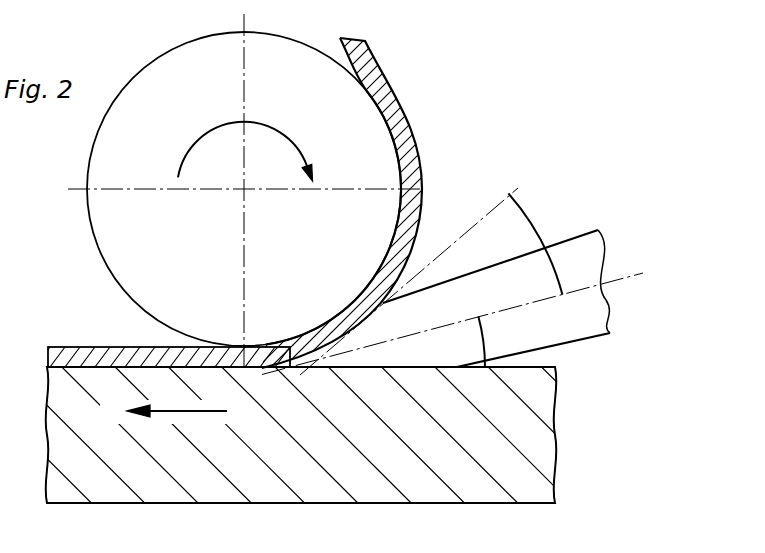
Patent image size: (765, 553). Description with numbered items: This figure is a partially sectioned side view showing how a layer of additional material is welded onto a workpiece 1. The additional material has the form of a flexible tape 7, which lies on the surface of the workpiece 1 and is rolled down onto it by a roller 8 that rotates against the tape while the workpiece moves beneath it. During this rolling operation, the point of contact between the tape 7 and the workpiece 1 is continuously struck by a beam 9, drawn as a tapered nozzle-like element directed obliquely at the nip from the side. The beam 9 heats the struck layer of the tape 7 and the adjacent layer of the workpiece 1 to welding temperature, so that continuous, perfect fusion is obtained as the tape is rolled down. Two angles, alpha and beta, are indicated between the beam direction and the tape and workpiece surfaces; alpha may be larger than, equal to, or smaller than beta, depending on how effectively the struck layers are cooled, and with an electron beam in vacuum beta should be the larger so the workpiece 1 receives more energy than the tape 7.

The workpiece 1 is at (540, 466).
The flexible tape 7 is at (90, 357).
The roller 8 is at (378, 160).
The beam 9 is at (573, 327).